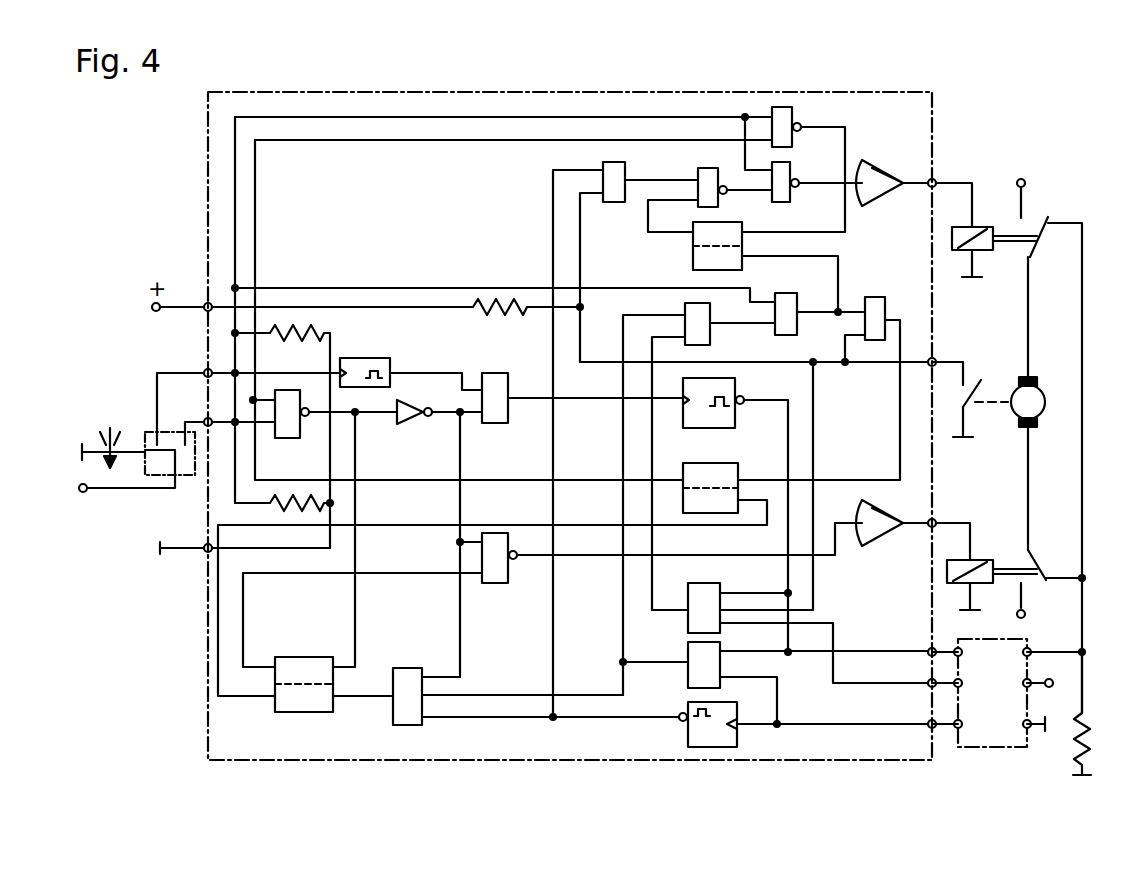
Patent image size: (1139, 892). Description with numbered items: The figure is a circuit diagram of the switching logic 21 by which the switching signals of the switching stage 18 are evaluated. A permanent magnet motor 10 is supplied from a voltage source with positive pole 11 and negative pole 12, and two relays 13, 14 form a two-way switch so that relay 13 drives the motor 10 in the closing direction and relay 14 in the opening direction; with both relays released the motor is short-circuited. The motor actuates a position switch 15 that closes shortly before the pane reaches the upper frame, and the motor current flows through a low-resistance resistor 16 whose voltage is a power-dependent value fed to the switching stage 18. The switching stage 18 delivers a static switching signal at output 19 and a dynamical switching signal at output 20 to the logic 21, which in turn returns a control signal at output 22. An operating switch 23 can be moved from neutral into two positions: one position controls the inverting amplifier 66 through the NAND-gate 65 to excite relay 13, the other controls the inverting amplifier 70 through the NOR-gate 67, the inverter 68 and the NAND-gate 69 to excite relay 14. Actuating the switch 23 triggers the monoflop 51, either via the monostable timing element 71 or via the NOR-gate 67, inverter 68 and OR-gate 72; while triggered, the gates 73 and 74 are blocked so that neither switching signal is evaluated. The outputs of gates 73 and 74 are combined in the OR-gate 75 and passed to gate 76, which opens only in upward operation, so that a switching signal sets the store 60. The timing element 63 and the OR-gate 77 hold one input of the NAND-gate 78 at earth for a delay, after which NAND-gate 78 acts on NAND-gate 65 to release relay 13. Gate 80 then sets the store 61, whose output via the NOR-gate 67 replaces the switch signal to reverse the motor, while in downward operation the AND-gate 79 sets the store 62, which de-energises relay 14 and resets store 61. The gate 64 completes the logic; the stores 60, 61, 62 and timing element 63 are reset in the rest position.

The permanent magnet motor 10 is at (1040, 396).
The positive pole 11 is at (1020, 178).
The negative pole 12 is at (1090, 778).
The relay 13 is at (984, 252).
The relay 14 is at (985, 560).
The position switch 15 is at (972, 408).
The low-resistance resistor 16 is at (1090, 740).
The switching stage 18 is at (1000, 748).
The output (input) for the static switching signal 19 is at (963, 724).
The output (input) for the dynamical switching signal 20 is at (963, 683).
The switching logic 21 is at (935, 116).
The output 22 is at (928, 645).
The operating switch 23 is at (182, 477).
The monoflop 51 is at (738, 388).
The store 60 is at (698, 247).
The store 61 is at (728, 472).
The store 62 is at (300, 657).
The monostable timing element 63 is at (738, 742).
The gate 64 is at (796, 114).
The NAND-gate 65 is at (790, 200).
The inverting amplifier 66 is at (880, 175).
The NOR-gate 67 is at (296, 438).
The inverter 68 is at (410, 424).
The NAND-gate 69 is at (508, 535).
The inverting amplifier 70 is at (878, 514).
The monostable timing element 71 is at (378, 358).
The OR-gate 72 is at (510, 380).
The gate 73 is at (722, 590).
The gate 74 is at (722, 646).
The OR-gate 75 is at (710, 304).
The gate 76 is at (797, 298).
The OR-gate 77 is at (628, 172).
The NAND-gate 78 is at (706, 176).
The AND-gate 79 is at (402, 668).
The gate 80 is at (886, 299).